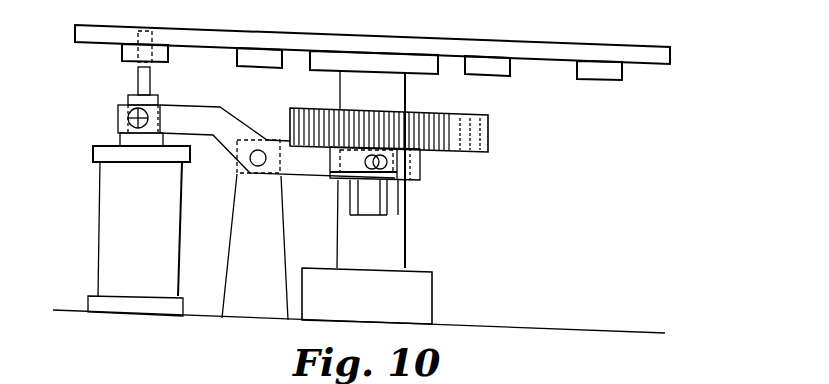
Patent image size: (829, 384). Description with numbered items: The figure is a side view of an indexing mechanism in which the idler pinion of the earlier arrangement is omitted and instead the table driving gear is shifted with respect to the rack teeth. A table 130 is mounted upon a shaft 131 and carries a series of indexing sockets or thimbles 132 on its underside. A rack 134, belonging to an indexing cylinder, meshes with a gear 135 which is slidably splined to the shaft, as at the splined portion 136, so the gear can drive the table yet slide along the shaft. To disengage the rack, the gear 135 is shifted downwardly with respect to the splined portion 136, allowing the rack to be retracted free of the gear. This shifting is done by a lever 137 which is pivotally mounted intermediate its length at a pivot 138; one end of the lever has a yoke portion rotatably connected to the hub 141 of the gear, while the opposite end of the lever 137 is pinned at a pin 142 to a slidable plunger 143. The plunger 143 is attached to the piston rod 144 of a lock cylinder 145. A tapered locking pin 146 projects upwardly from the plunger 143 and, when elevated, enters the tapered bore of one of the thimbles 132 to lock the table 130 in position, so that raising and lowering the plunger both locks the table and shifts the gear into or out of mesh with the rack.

The table 130 is at (550, 45).
The indexing sockets or thimbles 132 is at (282, 59).
The tapered locking pin 146 is at (150, 79).
The slidable plunger 143 is at (128, 100).
The pin 142 is at (128, 118).
The piston rod 144 is at (143, 138).
The lock cylinder 145 is at (108, 235).
The lever 137 is at (218, 115).
The pivot 138 is at (258, 166).
The rack 134 is at (488, 133).
The gear 135 is at (433, 108).
The hub 141 is at (420, 178).
The splined portion of the shaft 136 is at (398, 205).
The shaft 131 is at (405, 252).